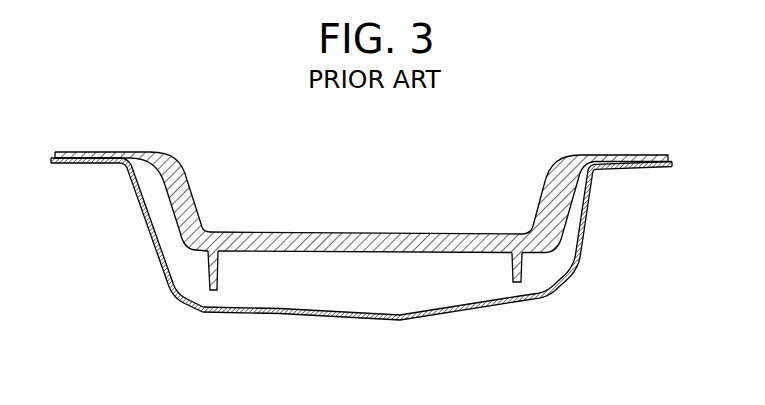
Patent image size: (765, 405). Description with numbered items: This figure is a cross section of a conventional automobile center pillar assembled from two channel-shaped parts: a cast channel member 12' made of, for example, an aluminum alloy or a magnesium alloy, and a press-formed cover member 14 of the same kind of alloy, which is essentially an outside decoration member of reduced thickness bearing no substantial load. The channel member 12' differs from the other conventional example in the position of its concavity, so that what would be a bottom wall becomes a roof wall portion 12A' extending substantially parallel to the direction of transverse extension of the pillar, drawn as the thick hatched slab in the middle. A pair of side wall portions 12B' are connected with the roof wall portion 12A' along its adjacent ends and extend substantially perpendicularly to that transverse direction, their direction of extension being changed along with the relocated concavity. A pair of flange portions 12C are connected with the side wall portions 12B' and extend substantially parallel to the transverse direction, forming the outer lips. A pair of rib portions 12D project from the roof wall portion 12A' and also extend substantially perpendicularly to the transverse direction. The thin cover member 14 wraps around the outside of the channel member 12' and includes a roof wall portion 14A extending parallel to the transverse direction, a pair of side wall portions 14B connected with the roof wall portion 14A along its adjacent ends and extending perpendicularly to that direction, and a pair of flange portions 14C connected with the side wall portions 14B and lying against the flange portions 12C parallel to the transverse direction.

The channel member 12' is at (361, 225).
The roof wall portion 12A' is at (371, 263).
The side wall portions 12B' is at (362, 188).
The flange portions 12C is at (88, 151).
The rib portions 12D is at (217, 281).
The cover member 14 is at (160, 300).
The roof wall portion 14A is at (338, 317).
The side wall portions 14B is at (150, 228).
The flange portions 14C is at (63, 165).